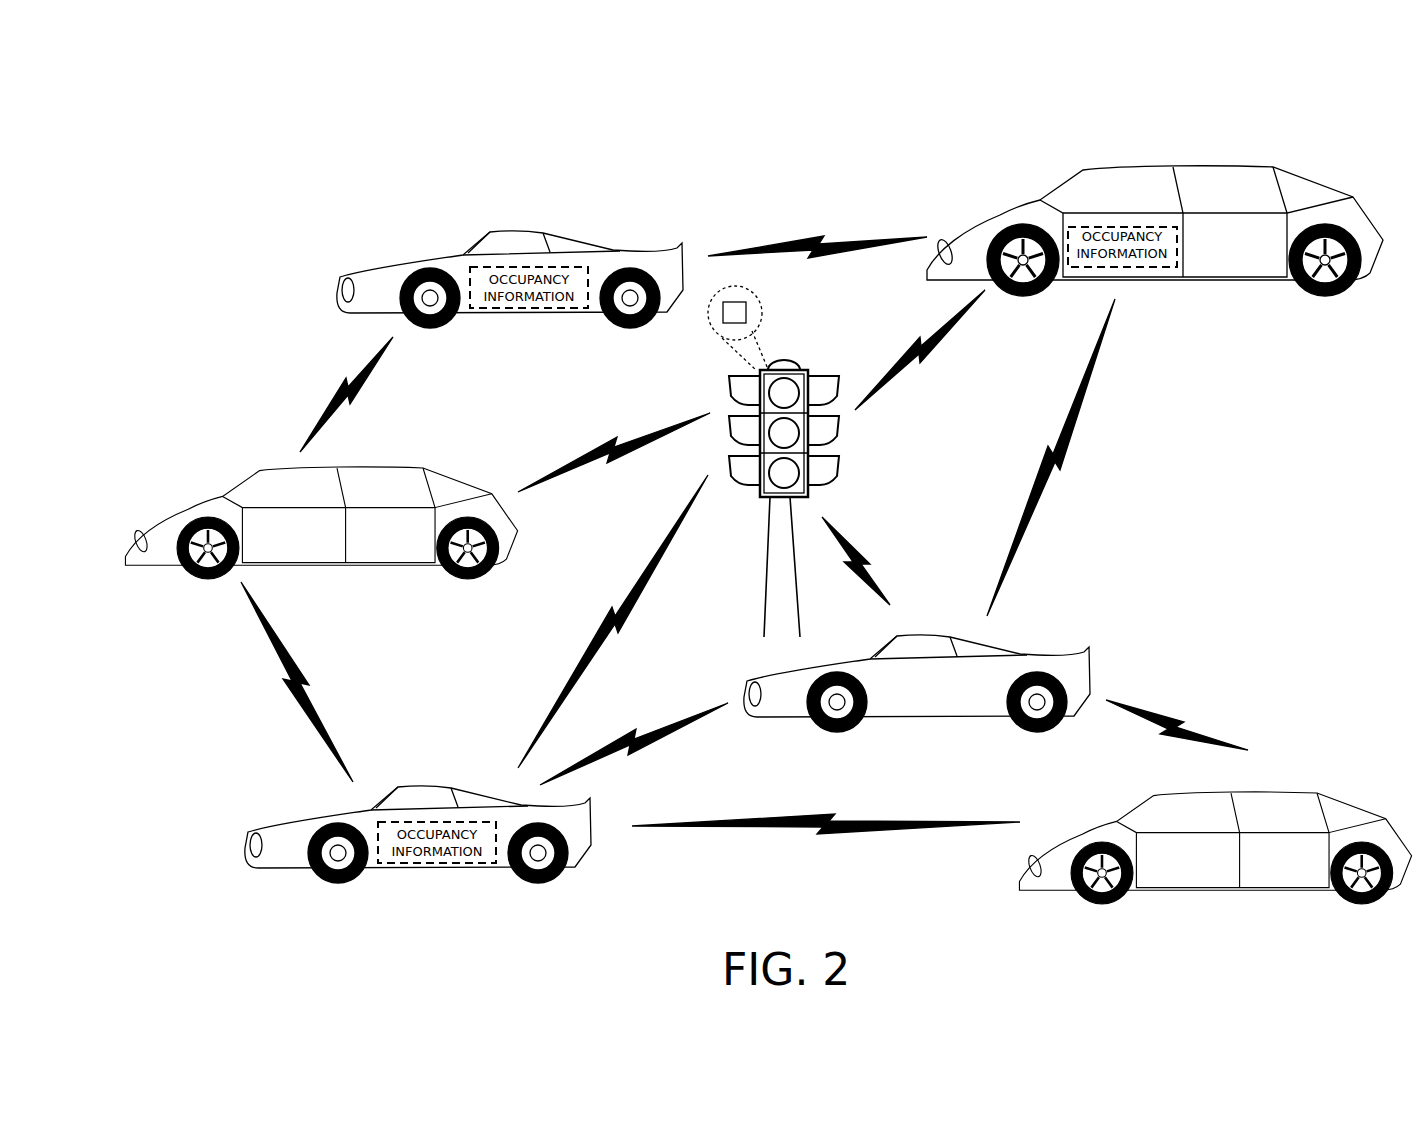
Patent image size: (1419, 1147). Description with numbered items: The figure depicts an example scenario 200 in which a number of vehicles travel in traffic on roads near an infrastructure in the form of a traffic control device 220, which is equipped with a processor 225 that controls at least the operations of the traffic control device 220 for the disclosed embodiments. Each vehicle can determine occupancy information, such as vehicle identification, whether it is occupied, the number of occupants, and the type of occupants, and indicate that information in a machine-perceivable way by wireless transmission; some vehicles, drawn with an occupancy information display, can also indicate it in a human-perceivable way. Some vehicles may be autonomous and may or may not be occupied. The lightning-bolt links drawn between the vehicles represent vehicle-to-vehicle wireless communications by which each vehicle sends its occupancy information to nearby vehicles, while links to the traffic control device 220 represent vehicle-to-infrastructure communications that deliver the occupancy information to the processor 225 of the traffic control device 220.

The scenario 200 is at (622, 100).
The traffic control device 220 is at (790, 362).
The processor 225 is at (748, 305).